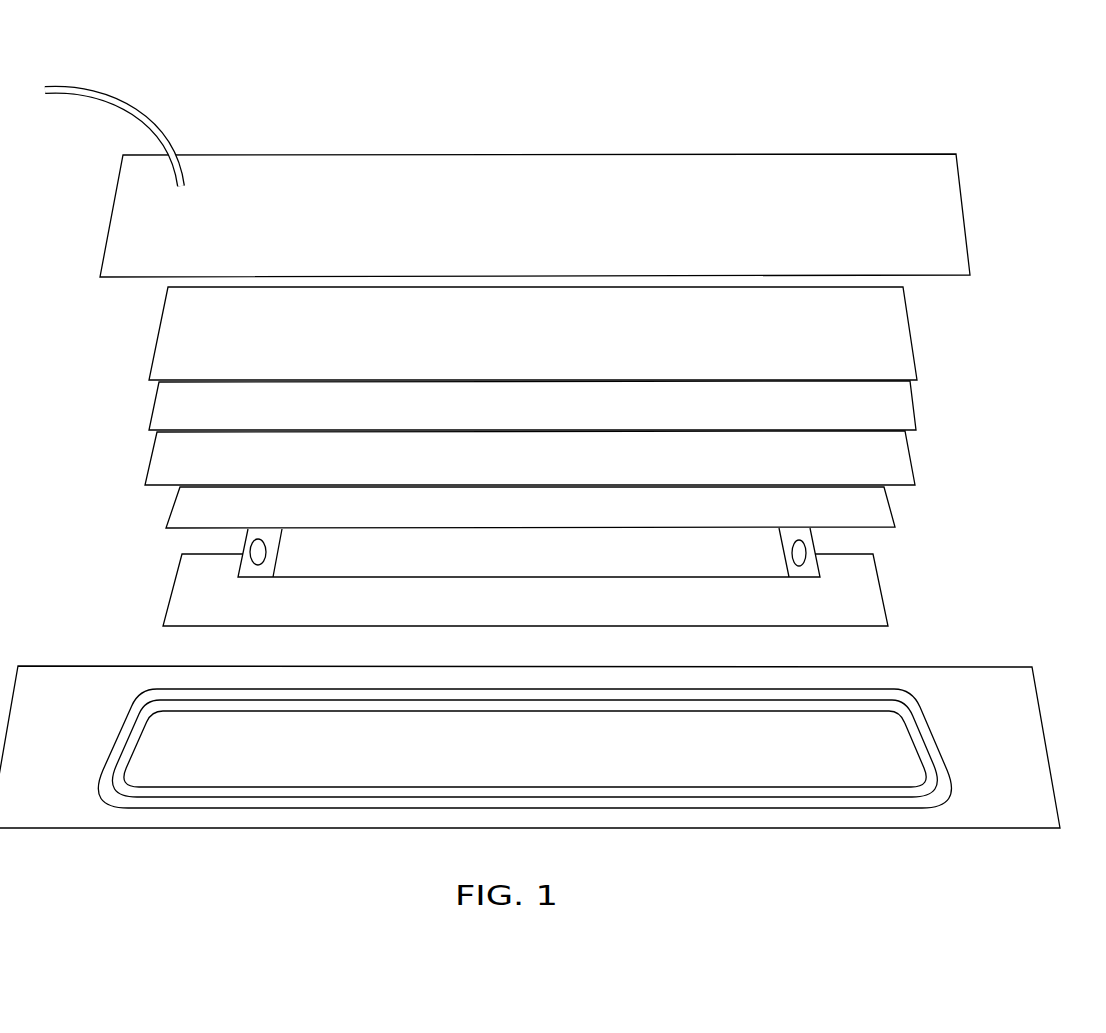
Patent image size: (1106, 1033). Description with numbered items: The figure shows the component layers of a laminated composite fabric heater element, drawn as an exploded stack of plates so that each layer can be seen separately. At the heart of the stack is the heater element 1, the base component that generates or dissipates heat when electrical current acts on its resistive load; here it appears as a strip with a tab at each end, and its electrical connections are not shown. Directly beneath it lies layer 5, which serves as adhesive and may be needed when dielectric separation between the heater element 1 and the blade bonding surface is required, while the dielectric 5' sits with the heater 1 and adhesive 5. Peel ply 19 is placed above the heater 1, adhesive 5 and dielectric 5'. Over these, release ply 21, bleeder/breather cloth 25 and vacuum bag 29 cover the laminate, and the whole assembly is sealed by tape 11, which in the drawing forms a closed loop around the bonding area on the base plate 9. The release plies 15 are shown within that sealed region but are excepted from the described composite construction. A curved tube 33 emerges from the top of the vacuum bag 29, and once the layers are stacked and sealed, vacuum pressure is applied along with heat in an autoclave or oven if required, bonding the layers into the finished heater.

The tube 33 is at (128, 101).
The vacuum bag 29 is at (920, 205).
The bleeder/breather cloth 25 is at (868, 337).
The release ply 21 is at (865, 410).
The peel ply 19 is at (855, 460).
The dielectric 5' is at (557, 510).
The heater element 1 is at (760, 553).
The layer (adhesive) 5 is at (558, 590).
The base plate 9 is at (1028, 720).
The tape 11 is at (923, 713).
The release plies 15 is at (888, 727).